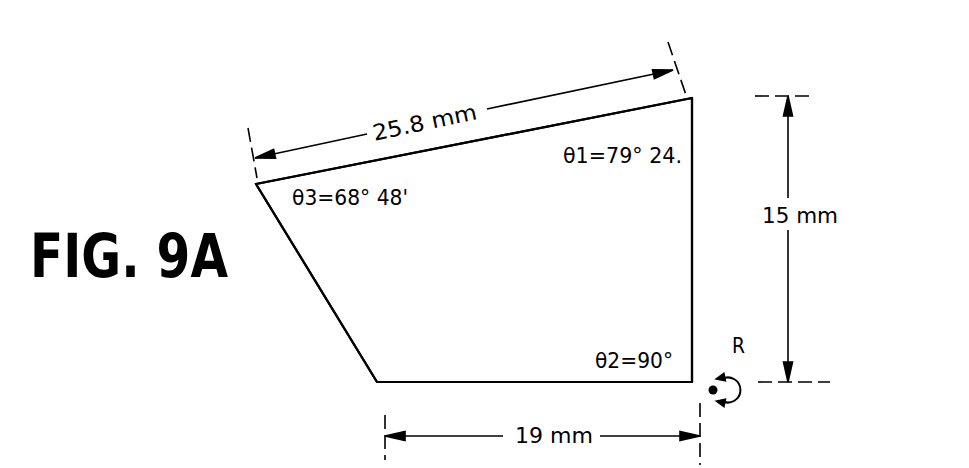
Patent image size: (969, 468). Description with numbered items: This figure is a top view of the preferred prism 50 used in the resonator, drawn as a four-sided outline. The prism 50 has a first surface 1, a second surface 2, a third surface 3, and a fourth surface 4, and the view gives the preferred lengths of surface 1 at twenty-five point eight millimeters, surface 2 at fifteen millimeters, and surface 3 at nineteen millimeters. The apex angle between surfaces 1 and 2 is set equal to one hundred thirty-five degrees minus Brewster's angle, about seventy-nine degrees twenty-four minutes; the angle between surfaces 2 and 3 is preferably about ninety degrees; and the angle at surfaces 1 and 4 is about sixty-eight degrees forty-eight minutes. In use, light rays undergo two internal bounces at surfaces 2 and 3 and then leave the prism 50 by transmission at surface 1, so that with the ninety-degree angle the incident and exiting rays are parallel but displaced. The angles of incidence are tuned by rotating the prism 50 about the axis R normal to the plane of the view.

The prism 50 is at (713, 100).
The first surface 1 is at (470, 141).
The second surface 2 is at (692, 210).
The third surface 3 is at (533, 382).
The fourth surface 4 is at (330, 303).